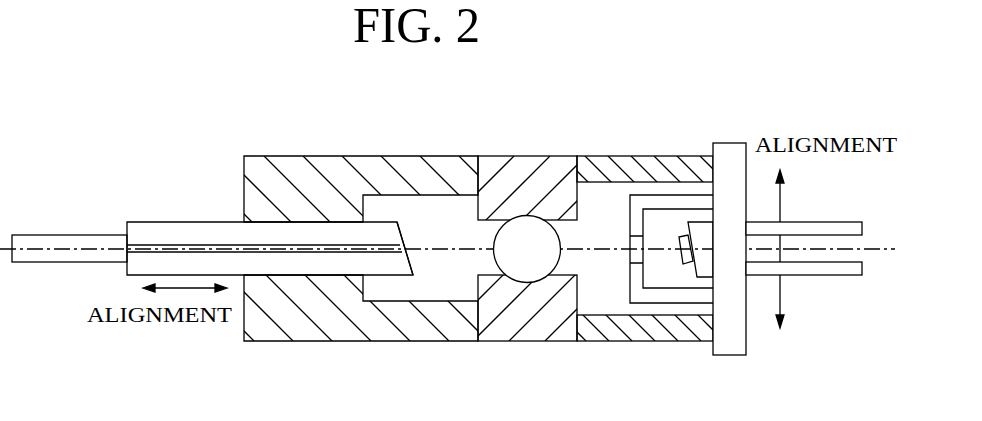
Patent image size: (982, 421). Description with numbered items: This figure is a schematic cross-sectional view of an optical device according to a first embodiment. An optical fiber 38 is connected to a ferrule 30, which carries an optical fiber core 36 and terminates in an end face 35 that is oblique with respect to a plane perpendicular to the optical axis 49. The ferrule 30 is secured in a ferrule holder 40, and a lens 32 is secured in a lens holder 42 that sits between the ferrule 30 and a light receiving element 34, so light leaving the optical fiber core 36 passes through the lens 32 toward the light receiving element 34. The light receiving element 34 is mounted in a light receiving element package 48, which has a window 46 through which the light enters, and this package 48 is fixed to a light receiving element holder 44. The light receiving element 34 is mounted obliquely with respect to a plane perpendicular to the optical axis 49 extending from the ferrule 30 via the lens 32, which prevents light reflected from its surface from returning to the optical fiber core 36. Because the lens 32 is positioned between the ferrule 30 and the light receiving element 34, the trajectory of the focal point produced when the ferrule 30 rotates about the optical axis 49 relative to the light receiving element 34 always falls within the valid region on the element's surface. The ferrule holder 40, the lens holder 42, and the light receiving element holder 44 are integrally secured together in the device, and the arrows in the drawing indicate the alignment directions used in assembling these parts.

The ferrule 30 is at (190, 232).
The lens 32 is at (522, 222).
The light receiving element 34 is at (685, 240).
The end face 35 is at (400, 220).
The optical fiber core 36 is at (145, 248).
The optical fiber 38 is at (52, 242).
The ferrule holder 40 is at (292, 160).
The lens holder 42 is at (553, 330).
The light receiving element holder 44 is at (625, 163).
The window 46 is at (628, 237).
The light receiving element package 48 is at (732, 147).
The optical axis 49 is at (880, 248).